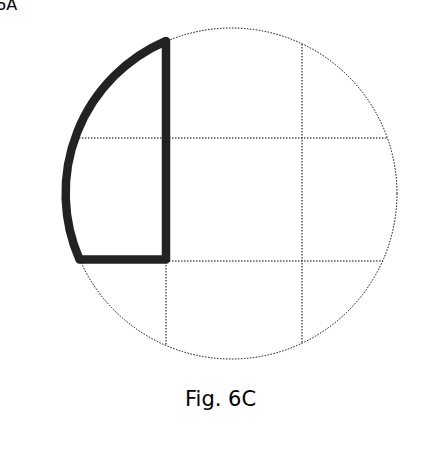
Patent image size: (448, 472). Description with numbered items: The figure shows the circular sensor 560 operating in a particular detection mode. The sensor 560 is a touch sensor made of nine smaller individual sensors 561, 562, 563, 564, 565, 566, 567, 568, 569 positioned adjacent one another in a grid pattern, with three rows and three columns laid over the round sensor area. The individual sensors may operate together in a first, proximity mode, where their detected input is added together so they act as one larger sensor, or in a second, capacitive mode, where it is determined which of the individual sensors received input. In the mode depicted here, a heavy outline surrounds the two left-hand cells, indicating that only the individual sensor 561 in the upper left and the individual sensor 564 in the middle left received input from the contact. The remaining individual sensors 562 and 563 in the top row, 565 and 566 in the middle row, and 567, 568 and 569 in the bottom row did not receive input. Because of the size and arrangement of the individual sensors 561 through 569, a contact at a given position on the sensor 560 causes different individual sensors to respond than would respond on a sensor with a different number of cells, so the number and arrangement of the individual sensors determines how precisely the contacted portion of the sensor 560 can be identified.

The sensor 560 is at (63, 155).
The individual sensor 561 is at (129, 113).
The individual sensor 562 is at (231, 113).
The individual sensor 563 is at (332, 120).
The individual sensor 564 is at (122, 191).
The individual sensor 565 is at (231, 187).
The individual sensor 566 is at (325, 197).
The individual sensor 567 is at (130, 284).
The individual sensor 568 is at (231, 281).
The individual sensor 569 is at (333, 291).